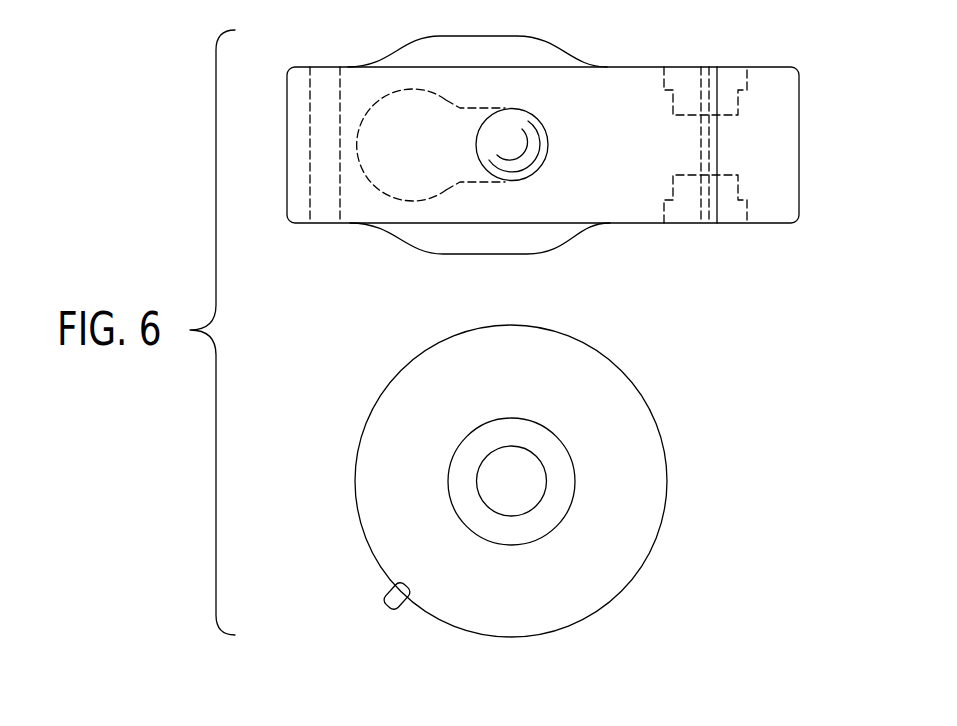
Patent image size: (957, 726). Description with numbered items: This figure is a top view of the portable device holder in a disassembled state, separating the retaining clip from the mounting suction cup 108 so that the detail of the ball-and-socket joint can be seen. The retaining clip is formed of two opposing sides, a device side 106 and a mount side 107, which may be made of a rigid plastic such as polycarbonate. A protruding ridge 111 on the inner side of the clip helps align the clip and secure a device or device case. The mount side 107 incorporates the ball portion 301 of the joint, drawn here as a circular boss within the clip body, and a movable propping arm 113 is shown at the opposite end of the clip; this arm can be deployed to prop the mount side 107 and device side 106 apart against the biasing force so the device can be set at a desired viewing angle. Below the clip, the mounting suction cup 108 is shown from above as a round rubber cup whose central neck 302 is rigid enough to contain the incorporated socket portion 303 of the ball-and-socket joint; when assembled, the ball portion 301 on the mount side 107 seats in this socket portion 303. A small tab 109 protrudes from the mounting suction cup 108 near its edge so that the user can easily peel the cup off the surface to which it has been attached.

The device side 106 is at (410, 245).
The mount side 107 is at (420, 73).
The protruding ridge 111 is at (318, 149).
The propping arm 113 is at (760, 143).
The ball portion 301 is at (547, 127).
The mounting suction cup 108 is at (625, 573).
The neck 302 is at (568, 484).
The socket portion 303 is at (533, 463).
The tab 109 is at (387, 602).